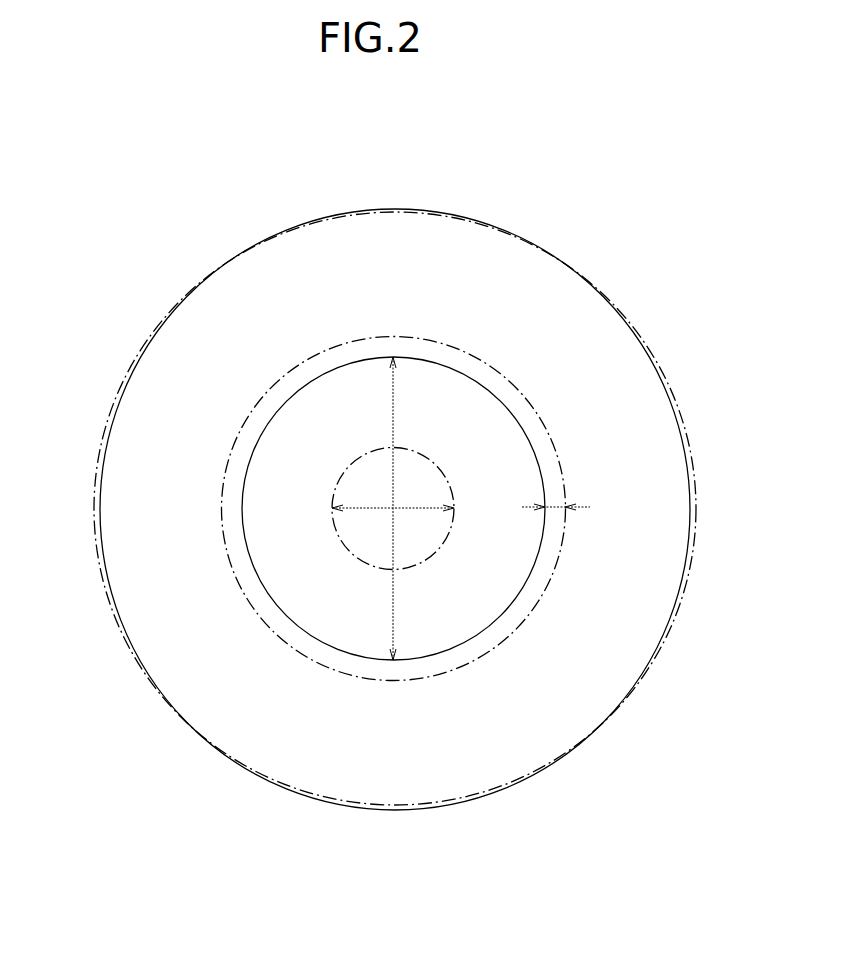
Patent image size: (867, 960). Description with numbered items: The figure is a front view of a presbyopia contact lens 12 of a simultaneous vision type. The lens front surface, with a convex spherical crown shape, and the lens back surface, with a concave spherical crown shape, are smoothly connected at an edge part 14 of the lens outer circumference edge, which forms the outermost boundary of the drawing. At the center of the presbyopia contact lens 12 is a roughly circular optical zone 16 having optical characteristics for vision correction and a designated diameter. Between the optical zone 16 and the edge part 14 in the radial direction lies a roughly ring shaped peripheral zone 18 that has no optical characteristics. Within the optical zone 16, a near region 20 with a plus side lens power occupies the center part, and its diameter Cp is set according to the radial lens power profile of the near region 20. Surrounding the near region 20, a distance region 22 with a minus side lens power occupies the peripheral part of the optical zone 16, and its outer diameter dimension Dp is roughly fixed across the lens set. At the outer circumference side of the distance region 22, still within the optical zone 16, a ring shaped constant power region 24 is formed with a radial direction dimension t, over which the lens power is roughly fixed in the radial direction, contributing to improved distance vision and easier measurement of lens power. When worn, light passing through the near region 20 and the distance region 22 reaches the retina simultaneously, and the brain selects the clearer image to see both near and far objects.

The presbyopia contact lens 12 is at (629, 261).
The edge part 14 is at (177, 718).
The optical zone 16 is at (488, 601).
The peripheral zone 18 is at (625, 577).
The near region 20 is at (370, 483).
The distance region 22 is at (287, 500).
The constant power region 24 is at (442, 350).
The outer diameter dimension of the distance region Dp is at (390, 397).
The diameter of the near region Cp is at (358, 512).
The radial direction dimension of the constant power region t is at (553, 505).